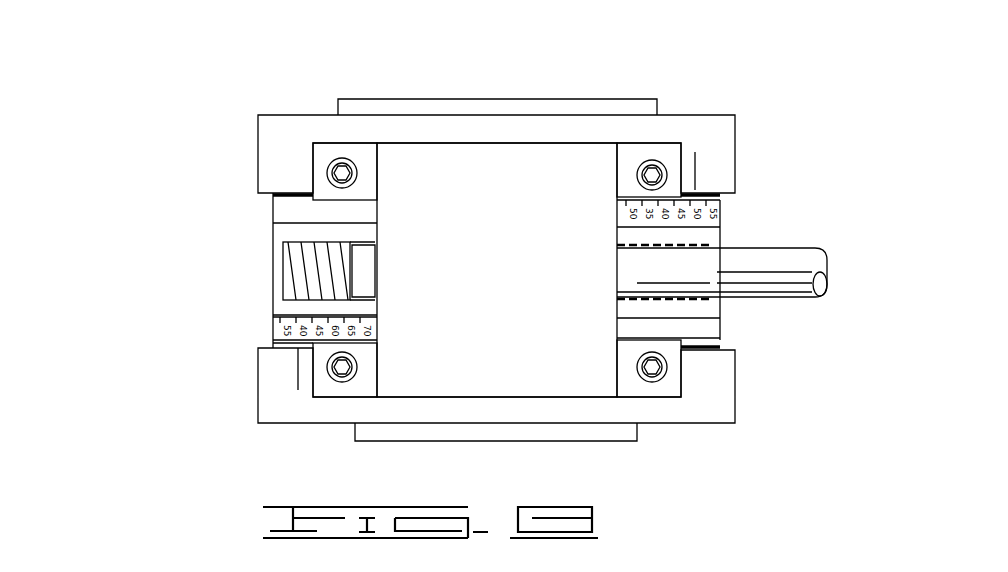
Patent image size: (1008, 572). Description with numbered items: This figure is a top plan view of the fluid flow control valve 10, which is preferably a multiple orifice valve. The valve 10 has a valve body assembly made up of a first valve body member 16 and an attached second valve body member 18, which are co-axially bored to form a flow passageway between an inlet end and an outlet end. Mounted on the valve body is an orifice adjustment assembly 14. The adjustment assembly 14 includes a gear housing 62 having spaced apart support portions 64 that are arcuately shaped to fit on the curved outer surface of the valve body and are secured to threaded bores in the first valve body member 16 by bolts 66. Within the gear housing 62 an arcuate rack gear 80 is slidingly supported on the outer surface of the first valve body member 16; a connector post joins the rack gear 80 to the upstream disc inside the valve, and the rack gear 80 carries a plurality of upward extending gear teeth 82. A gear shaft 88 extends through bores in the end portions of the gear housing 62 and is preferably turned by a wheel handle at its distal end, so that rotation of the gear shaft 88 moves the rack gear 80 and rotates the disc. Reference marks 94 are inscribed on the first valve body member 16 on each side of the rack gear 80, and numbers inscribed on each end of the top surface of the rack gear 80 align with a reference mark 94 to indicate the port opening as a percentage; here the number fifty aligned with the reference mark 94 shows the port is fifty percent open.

The fluid flow control valve 10 is at (223, 60).
The orifice adjustment assembly 14 is at (447, 175).
The first valve body member 16 is at (658, 425).
The second valve body member 18 is at (385, 99).
The gear housing 62 is at (500, 289).
The support portions 64 is at (673, 393).
The bolts 66 is at (330, 172).
The arcuate rack gear 80 is at (290, 290).
The gear teeth 82 is at (690, 302).
The gear shaft 88 is at (358, 258).
The reference marks 94 is at (697, 176).